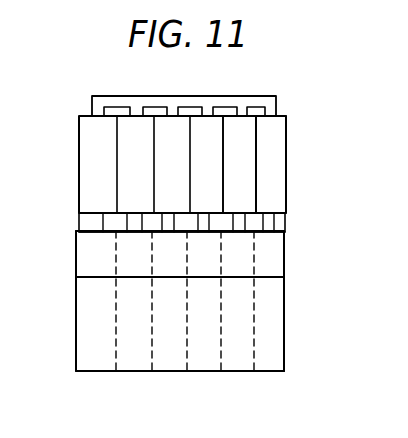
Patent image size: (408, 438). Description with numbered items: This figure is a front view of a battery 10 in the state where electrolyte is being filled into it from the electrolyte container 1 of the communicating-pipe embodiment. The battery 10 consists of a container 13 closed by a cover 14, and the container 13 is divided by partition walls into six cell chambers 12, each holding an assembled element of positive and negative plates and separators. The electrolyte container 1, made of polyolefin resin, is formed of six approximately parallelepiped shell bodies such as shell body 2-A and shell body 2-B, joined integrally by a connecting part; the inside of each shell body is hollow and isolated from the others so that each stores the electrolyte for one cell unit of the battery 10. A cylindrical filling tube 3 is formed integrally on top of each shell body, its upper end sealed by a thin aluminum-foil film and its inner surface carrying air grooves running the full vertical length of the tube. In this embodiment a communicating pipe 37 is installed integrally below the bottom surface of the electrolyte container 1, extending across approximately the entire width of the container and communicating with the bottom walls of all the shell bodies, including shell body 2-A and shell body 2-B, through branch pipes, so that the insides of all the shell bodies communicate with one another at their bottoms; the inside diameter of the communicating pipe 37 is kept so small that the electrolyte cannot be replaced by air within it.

The electrolyte container 1 is at (78, 170).
The shell body 2-A is at (281, 169).
The shell body 2-B is at (243, 133).
The filling tube 3 is at (95, 222).
The communicating pipe 37 is at (113, 103).
The battery 10 is at (76, 277).
The cell chamber 12 is at (94, 362).
The container 13 is at (285, 286).
The cover 14 is at (285, 247).